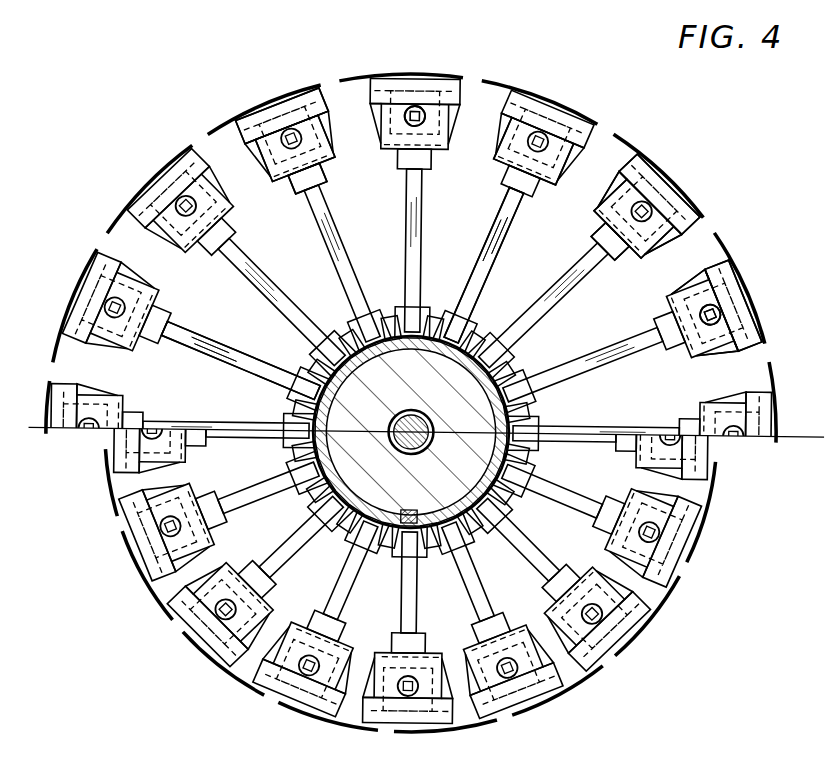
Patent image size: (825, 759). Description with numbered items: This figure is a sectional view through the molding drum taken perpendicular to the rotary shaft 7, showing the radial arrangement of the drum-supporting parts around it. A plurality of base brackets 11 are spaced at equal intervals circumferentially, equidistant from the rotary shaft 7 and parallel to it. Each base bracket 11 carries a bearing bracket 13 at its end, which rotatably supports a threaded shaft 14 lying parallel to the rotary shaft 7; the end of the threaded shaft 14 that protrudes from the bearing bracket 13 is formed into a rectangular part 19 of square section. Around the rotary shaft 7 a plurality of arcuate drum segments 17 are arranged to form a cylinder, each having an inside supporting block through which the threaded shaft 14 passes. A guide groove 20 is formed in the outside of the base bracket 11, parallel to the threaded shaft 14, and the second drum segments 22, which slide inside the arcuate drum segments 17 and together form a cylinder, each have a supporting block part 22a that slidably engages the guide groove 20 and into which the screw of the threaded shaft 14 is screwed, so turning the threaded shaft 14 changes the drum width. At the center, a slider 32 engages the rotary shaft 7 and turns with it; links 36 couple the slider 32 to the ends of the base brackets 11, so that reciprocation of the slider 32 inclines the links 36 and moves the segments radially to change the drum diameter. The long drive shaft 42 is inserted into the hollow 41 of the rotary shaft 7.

The rotary shaft 7 is at (456, 465).
The base bracket 11 is at (327, 128).
The bearing bracket 13 is at (600, 189).
The threaded shaft 14 is at (415, 108).
The arcuate drum segment 17 is at (205, 140).
The rectangular part 19 is at (424, 120).
The guide groove 20 is at (330, 165).
The second drum segment 22 is at (308, 101).
The supporting block part 22a is at (694, 262).
The slider 32 is at (470, 366).
The link 36 is at (238, 360).
The hollow 41 is at (416, 456).
The drive shaft 42 is at (412, 409).